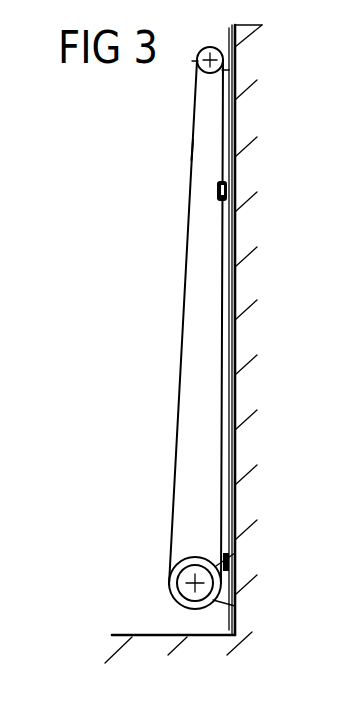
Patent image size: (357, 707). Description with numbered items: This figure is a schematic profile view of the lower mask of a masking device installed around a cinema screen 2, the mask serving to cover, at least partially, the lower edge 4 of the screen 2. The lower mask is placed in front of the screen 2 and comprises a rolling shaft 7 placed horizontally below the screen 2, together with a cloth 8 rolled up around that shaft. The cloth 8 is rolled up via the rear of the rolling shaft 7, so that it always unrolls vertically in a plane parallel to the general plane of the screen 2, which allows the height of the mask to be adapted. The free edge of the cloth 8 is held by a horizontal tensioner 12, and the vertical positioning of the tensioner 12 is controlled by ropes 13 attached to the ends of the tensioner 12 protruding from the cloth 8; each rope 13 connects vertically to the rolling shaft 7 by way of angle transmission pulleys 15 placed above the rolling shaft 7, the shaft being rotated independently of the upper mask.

The cinema screen 2 is at (233, 343).
The lower edge 4 is at (233, 570).
The rolling shaft 7 is at (169, 583).
The cloth 8 is at (222, 293).
The horizontal tensioner 12 is at (217, 191).
The ropes 13 is at (191, 147).
The angle transmission pulleys 15 is at (199, 66).